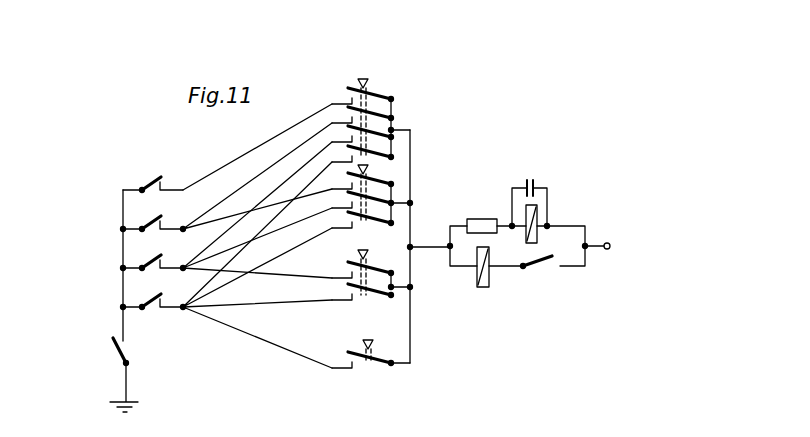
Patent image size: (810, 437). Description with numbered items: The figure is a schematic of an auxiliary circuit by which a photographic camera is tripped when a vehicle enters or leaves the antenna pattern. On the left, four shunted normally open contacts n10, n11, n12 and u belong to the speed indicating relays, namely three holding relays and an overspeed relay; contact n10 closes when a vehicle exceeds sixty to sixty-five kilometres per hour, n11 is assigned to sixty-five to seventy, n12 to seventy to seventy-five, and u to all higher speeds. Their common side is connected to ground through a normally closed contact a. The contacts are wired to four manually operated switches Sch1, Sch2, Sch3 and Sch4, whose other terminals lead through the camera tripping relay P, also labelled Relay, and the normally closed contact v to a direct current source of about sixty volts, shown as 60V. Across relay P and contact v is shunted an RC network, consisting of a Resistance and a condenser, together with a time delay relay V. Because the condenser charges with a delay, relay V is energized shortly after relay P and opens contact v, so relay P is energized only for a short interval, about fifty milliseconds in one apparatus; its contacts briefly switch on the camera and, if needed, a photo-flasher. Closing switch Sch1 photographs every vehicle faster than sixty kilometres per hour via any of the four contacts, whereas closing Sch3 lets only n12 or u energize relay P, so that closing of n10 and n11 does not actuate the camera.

The manually operated switch Sch1 is at (380, 105).
The manually operated switch Sch2 is at (386, 197).
The manually operated switch Sch3 is at (386, 297).
The manually operated switch Sch4 is at (378, 366).
The normally open contact n10 is at (227, 148).
The normally open contact n11 is at (227, 177).
The normally open contact n12 is at (227, 210).
The normally open contact u is at (227, 265).
The normally closed contact a is at (116, 359).
The resistance Resistance is at (483, 218).
The time delay relay V is at (532, 215).
The camera tripping relay P is at (490, 274).
The camera tripping relay Relay is at (483, 289).
The normally closed contact v is at (537, 272).
The D.C. voltage source 60V is at (639, 246).